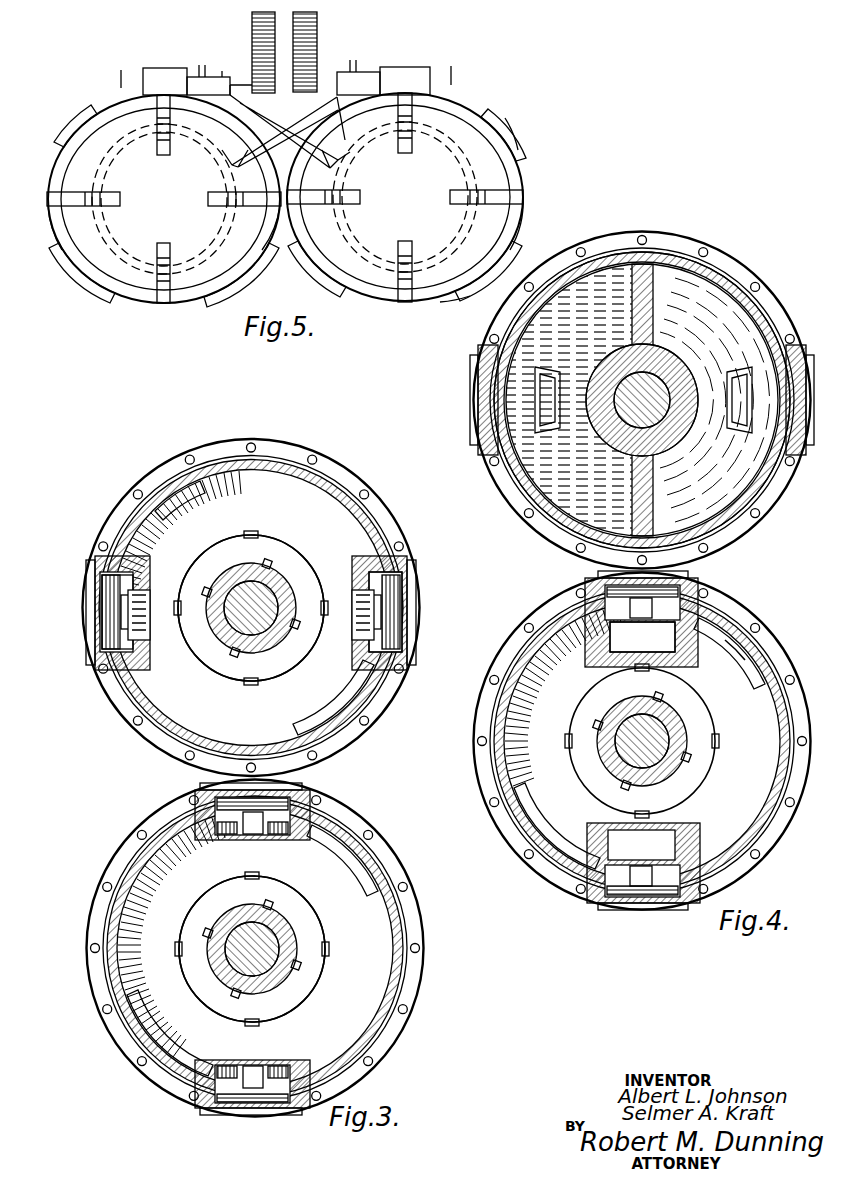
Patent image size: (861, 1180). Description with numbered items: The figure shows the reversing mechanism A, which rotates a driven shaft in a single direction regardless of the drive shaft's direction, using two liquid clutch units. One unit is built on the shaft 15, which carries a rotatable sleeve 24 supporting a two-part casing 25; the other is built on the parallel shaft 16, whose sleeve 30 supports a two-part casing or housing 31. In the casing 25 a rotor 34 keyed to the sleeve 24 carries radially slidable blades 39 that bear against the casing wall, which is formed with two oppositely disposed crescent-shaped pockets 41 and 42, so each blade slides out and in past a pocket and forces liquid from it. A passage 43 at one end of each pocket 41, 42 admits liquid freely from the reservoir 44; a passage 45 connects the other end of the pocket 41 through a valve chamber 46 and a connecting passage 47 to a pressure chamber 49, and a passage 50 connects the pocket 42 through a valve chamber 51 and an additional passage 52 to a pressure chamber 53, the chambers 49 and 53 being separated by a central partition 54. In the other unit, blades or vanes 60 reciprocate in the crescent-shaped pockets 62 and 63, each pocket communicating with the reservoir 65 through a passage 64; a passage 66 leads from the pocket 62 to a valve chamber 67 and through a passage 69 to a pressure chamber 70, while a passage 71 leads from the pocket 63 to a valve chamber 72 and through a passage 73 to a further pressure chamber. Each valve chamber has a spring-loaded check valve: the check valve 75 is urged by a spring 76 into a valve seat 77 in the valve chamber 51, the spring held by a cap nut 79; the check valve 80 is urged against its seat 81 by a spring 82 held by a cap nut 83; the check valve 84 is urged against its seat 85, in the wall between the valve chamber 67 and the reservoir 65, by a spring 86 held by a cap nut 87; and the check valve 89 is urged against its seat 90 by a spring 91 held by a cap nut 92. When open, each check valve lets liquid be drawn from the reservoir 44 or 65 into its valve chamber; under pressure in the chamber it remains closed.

In FIG. 3, the shaft 15 is at (262, 603).
In FIG. 4, the shaft 15 is at (640, 380).
In FIG. 3, the shaft 16 is at (272, 932).
In FIG. 4, the shaft 16 is at (664, 735).
In FIG. 3, the sleeve 24 is at (252, 568).
In FIG. 4, the sleeve 24 is at (620, 372).
In FIG. 3, the two-part casing 25 is at (150, 492).
In FIG. 3, the sleeve 30 is at (280, 953).
In FIG. 4, the sleeve 30 is at (672, 766).
In FIG. 5, the sleeve 30 is at (164, 199).
In FIG. 3, the two-part casing or housing 31 is at (392, 1032).
In FIG. 5, the rotor 34 is at (405, 197).
In FIG. 5, the radially slidable blades 39 is at (400, 134).
In FIG. 5, the crescent-shaped pocket 41 is at (520, 200).
In FIG. 5, the crescent-shaped pocket 42 is at (310, 258).
In FIG. 3, the passage 43 is at (325, 716).
In FIG. 5, the passage 43 is at (470, 100).
In FIG. 3, the reservoir 44 is at (260, 597).
In FIG. 5, the reservoir 44 is at (446, 62).
In FIG. 3, the passage 45 is at (400, 588).
In FIG. 5, the passage 45 is at (440, 304).
In FIG. 3, the valve chamber 46 is at (385, 660).
In FIG. 4, the connecting passage 47 is at (750, 392).
In FIG. 4, the pressure chamber 49 is at (735, 320).
In FIG. 3, the passage 50 is at (118, 643).
In FIG. 5, the passage 50 is at (338, 98).
In FIG. 3, the valve chamber 51 is at (108, 592).
In FIG. 4, the additional passage 52 is at (522, 400).
In FIG. 4, the pressure chamber 53 is at (525, 465).
In FIG. 5, the pressure chamber 53 is at (318, 16).
In FIG. 4, the central partition 54 is at (648, 262).
In FIG. 5, the blades or vanes 60 is at (82, 197).
In FIG. 5, the crescent-shaped pocket 62 is at (265, 250).
In FIG. 5, the crescent-shaped pocket 63 is at (65, 248).
In FIG. 3, the passage 64 is at (360, 866).
In FIG. 4, the passage 64 is at (745, 655).
In FIG. 5, the passage 64 is at (95, 112).
In FIG. 3, the reservoir 65 is at (275, 949).
In FIG. 5, the reservoir 65 is at (125, 68).
In FIG. 3, the passage 66 is at (290, 830).
In FIG. 4, the passage 66 is at (700, 615).
In FIG. 5, the passage 66 is at (258, 105).
In FIG. 3, the valve chamber 67 is at (205, 808).
In FIG. 4, the valve chamber 67 is at (606, 600).
In FIG. 4, the passage 69 is at (712, 650).
In FIG. 5, the pressure chamber 70 is at (252, 16).
In FIG. 3, the passage 71 is at (215, 1100).
In FIG. 5, the passage 71 is at (112, 304).
In FIG. 3, the valve chamber 72 is at (240, 1090).
In FIG. 4, the passage 73 is at (700, 840).
In FIG. 3, the check valve 75 is at (145, 595).
In FIG. 5, the check valve 75 is at (380, 68).
In FIG. 3, the spring 76 is at (118, 620).
In FIG. 3, the valve seat 77 is at (148, 648).
In FIG. 3, the cap nut 79 is at (88, 570).
In FIG. 4, the cap nut 79 is at (480, 405).
In FIG. 3, the check valve 80 is at (366, 630).
In FIG. 3, the valve seat 81 is at (372, 602).
In FIG. 3, the spring 82 is at (390, 606).
In FIG. 3, the cap nut 83 is at (414, 622).
In FIG. 4, the cap nut 83 is at (810, 450).
In FIG. 3, the check valve 84 is at (218, 832).
In FIG. 4, the check valve 84 is at (590, 655).
In FIG. 5, the check valve 84 is at (200, 70).
In FIG. 3, the valve seat 85 is at (240, 834).
In FIG. 3, the spring 86 is at (262, 832).
In FIG. 4, the spring 86 is at (592, 608).
In FIG. 3, the cap nut 87 is at (300, 785).
In FIG. 4, the cap nut 87 is at (690, 573).
In FIG. 3, the check valve 89 is at (248, 1064).
In FIG. 4, the check valve 89 is at (585, 875).
In FIG. 3, the valve seat 90 is at (268, 1065).
In FIG. 3, the spring 91 is at (262, 1090).
In FIG. 4, the spring 91 is at (655, 884).
In FIG. 3, the cap nut 92 is at (295, 1112).
In FIG. 4, the cap nut 92 is at (635, 910).
In FIG. 5, the reversing mechanism A is at (520, 118).